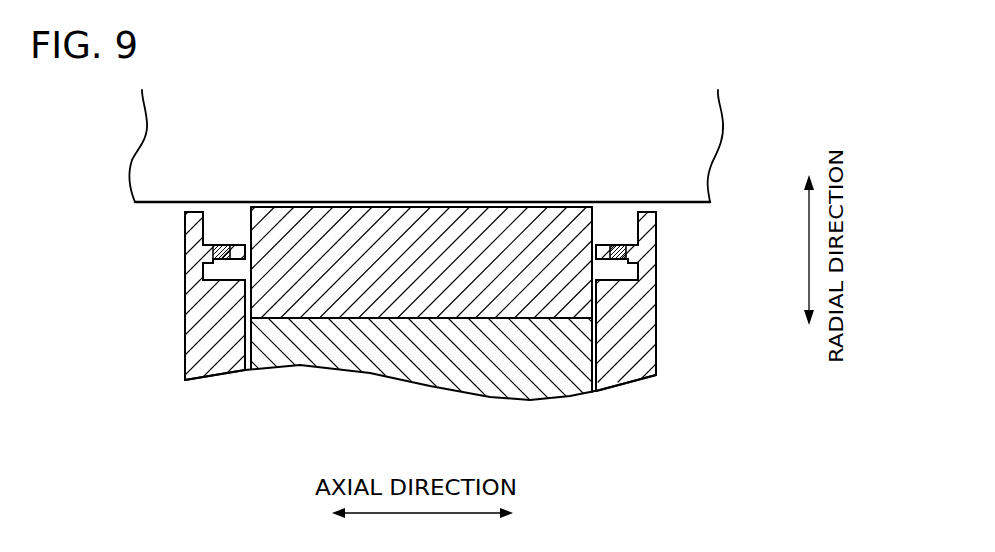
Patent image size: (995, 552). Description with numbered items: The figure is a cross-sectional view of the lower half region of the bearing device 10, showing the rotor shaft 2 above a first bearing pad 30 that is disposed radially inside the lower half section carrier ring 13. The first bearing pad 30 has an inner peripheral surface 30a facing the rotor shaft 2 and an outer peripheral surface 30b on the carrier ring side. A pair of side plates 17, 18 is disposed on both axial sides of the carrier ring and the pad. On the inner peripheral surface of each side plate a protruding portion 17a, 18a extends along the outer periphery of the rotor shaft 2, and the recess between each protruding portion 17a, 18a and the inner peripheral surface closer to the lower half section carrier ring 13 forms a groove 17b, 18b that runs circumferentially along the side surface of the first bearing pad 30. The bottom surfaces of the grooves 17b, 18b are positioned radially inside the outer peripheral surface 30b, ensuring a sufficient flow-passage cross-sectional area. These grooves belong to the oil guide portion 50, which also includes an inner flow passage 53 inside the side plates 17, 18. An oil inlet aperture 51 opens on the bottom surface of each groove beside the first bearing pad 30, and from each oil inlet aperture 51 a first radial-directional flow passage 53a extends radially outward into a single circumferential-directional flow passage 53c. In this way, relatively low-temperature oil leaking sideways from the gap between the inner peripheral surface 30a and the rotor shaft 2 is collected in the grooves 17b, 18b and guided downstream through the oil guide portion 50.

The rotor shaft 2 is at (150, 146).
The bearing device 10 is at (752, 175).
The lower half section carrier ring 13 is at (387, 367).
The side plate 17 is at (657, 358).
The protruding portion 17a is at (657, 221).
The groove 17b is at (607, 223).
The side plate 18 is at (184, 360).
The protruding portion 18a is at (184, 221).
The groove 18b is at (226, 224).
The first bearing pad 30 is at (424, 212).
The inner peripheral surface of first bearing pad 30a is at (477, 203).
The outer peripheral surface of first bearing pad 30b is at (482, 345).
The oil guide portion 50 is at (137, 327).
The oil inlet aperture 51 is at (220, 230).
The inner flow passage 53 is at (212, 261).
The first radial-directional flow passage 53a is at (236, 247).
The circumferential-directional flow passage 53c is at (200, 282).